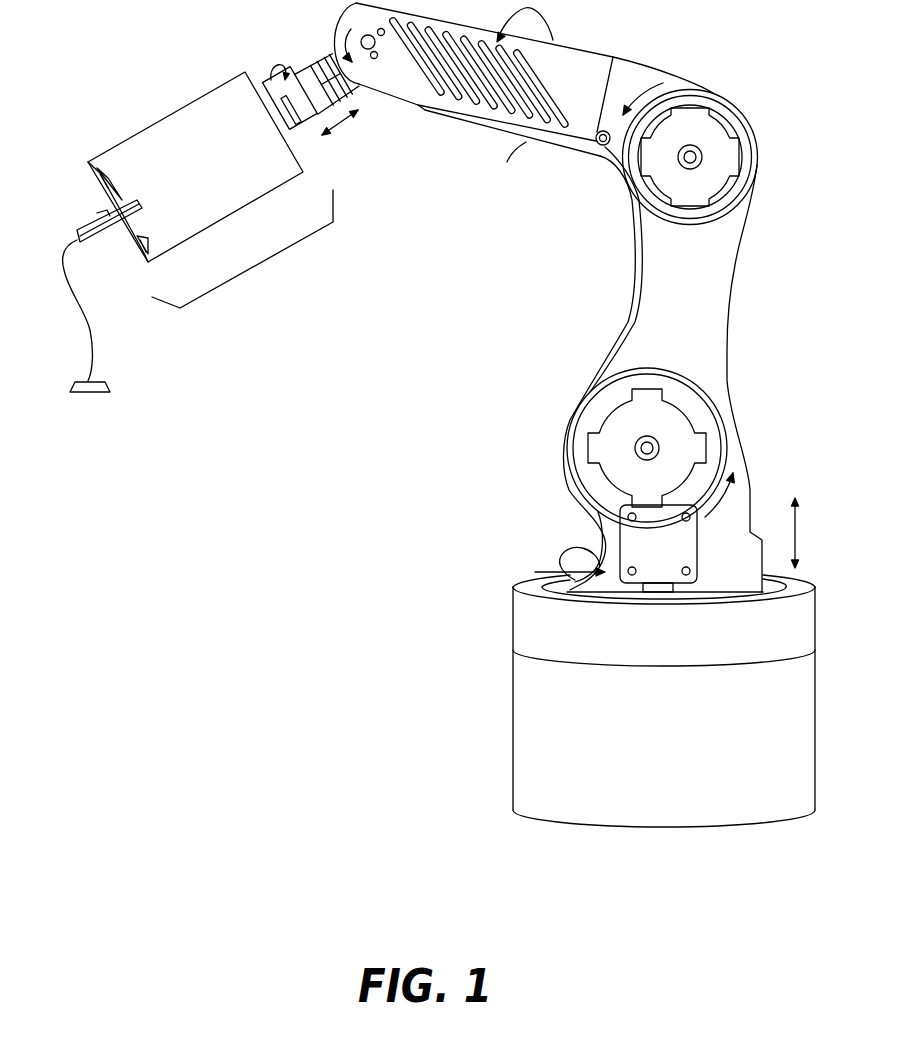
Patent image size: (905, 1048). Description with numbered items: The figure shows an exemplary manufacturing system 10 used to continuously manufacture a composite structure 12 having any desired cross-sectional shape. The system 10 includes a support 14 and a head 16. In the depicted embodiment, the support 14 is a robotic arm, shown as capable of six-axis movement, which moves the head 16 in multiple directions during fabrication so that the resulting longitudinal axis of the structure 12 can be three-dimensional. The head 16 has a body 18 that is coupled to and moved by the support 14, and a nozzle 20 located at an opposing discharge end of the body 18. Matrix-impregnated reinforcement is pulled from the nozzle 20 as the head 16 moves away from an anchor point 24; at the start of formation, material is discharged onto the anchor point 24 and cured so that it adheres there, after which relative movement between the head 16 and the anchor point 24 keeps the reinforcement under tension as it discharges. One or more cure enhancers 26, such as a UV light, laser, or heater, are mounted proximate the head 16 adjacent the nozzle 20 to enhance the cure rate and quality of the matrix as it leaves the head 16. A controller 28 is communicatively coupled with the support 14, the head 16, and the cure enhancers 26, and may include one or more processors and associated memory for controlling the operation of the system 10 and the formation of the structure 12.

The system 10 is at (350, 608).
The composite structure 12 is at (97, 352).
The support 14 is at (689, 340).
The head 16 is at (267, 257).
The body 18 is at (209, 177).
The nozzle 20 is at (75, 233).
The anchor point 24 is at (86, 394).
The cure enhancer 26 is at (100, 180).
The controller 28 is at (673, 552).